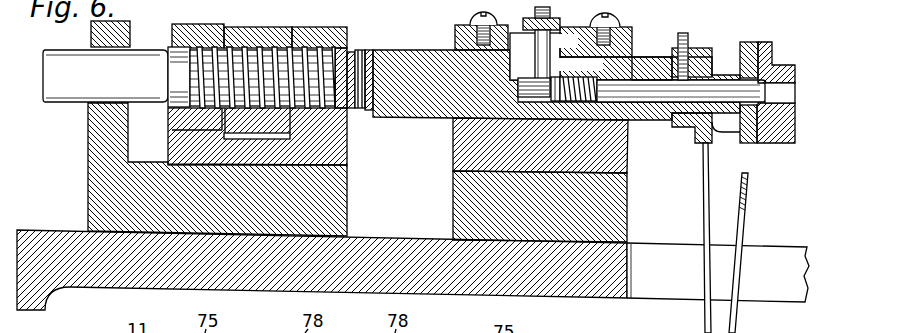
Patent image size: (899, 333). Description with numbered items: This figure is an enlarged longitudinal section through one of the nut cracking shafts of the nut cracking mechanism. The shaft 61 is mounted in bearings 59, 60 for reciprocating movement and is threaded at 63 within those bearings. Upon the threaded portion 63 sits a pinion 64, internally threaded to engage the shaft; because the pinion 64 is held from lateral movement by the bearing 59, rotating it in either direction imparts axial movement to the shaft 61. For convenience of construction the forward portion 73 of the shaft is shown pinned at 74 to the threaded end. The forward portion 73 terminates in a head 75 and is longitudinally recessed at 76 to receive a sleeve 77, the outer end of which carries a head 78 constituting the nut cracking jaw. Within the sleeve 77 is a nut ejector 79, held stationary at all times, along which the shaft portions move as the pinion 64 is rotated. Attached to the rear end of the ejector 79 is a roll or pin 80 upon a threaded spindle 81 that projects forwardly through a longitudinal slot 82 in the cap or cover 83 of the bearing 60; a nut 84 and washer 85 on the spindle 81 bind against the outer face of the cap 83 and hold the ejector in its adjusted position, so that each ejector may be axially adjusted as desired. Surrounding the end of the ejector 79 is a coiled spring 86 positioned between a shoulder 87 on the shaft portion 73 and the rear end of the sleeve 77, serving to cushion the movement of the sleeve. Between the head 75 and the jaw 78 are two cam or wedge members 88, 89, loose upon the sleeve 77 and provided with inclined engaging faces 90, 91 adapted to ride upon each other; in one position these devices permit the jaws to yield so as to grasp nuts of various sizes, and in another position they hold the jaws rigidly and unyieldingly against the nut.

The bearing 59 is at (320, 148).
The bearing 60 is at (615, 160).
The shaft 61 is at (149, 90).
The threaded portion 63 is at (203, 70).
The pinion 64 is at (263, 33).
The forward portion 73 is at (417, 65).
The pin 74 is at (370, 80).
The head 75 is at (685, 120).
The longitudinal recess 76 is at (518, 68).
The sleeve 77 is at (648, 64).
The head 78 is at (768, 42).
The nut ejector 79 is at (723, 90).
The roll or pin 80 is at (529, 76).
The threaded spindle 81 is at (535, 32).
The longitudinal slot 82 is at (606, 22).
The cap or cover 83 is at (467, 25).
The nut 84 is at (527, 18).
The washer 85 is at (593, 42).
The coiled spring 86 is at (590, 78).
The shoulder 87 is at (560, 80).
The cam or wedge member 88 is at (700, 38).
The cam or wedge member 89 is at (745, 42).
The inclined engaging face 90 is at (431, 332).
The inclined engaging face 91 is at (258, 332).